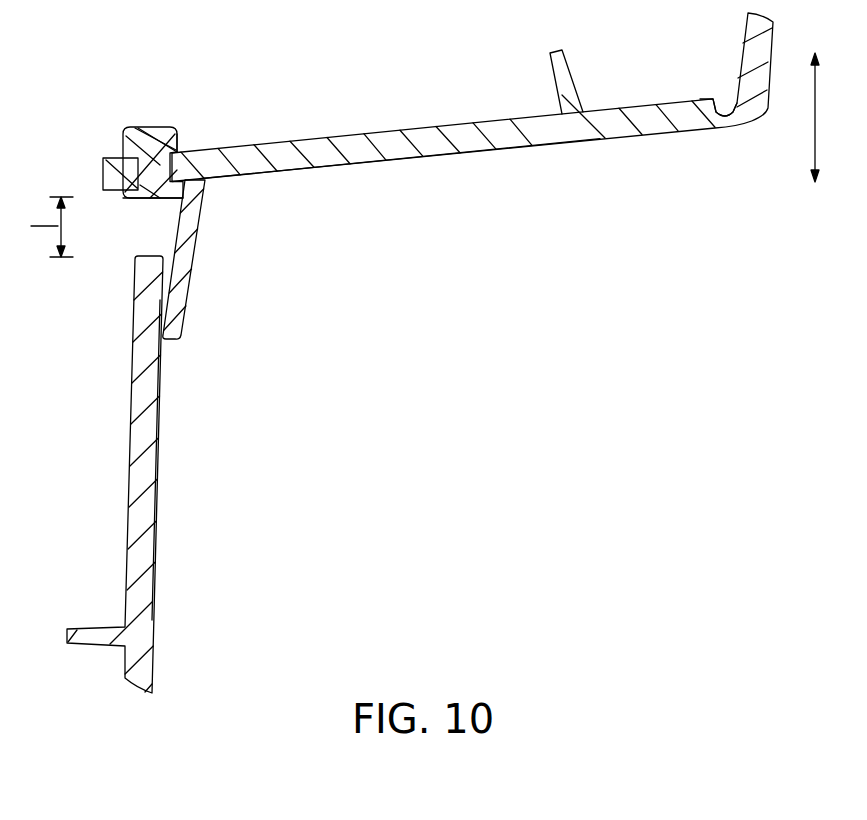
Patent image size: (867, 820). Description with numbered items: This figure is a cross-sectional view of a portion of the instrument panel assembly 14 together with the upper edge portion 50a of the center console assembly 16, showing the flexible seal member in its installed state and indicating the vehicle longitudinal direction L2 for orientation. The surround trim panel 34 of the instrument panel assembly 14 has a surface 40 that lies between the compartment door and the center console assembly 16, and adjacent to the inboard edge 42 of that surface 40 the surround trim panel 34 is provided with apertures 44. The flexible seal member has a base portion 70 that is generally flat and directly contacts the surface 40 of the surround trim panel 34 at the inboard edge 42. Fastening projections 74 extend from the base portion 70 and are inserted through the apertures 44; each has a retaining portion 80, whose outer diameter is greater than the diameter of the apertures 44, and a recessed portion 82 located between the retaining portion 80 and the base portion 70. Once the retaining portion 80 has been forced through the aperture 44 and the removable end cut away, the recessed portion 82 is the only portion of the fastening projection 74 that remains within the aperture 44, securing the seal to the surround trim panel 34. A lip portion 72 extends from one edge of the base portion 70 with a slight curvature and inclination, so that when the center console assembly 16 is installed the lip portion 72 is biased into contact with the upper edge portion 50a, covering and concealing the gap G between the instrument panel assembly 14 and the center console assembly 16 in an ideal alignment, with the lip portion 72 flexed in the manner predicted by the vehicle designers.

The instrument panel assembly 14 is at (343, 136).
The center console assembly 16 is at (128, 438).
The surround trim panel 34 is at (628, 136).
The surface 40 is at (404, 160).
The inboard edge 42 is at (188, 152).
The apertures 44 is at (133, 127).
The upper edge portion 50a is at (157, 505).
The base portion 70 is at (148, 200).
The lip portion 72 is at (183, 297).
The fastening projections 74 is at (158, 137).
The retaining portion 80 is at (177, 135).
The recessed portion 82 is at (152, 171).
The gap G is at (41, 227).
The vehicle longitudinal direction L2 is at (813, 128).